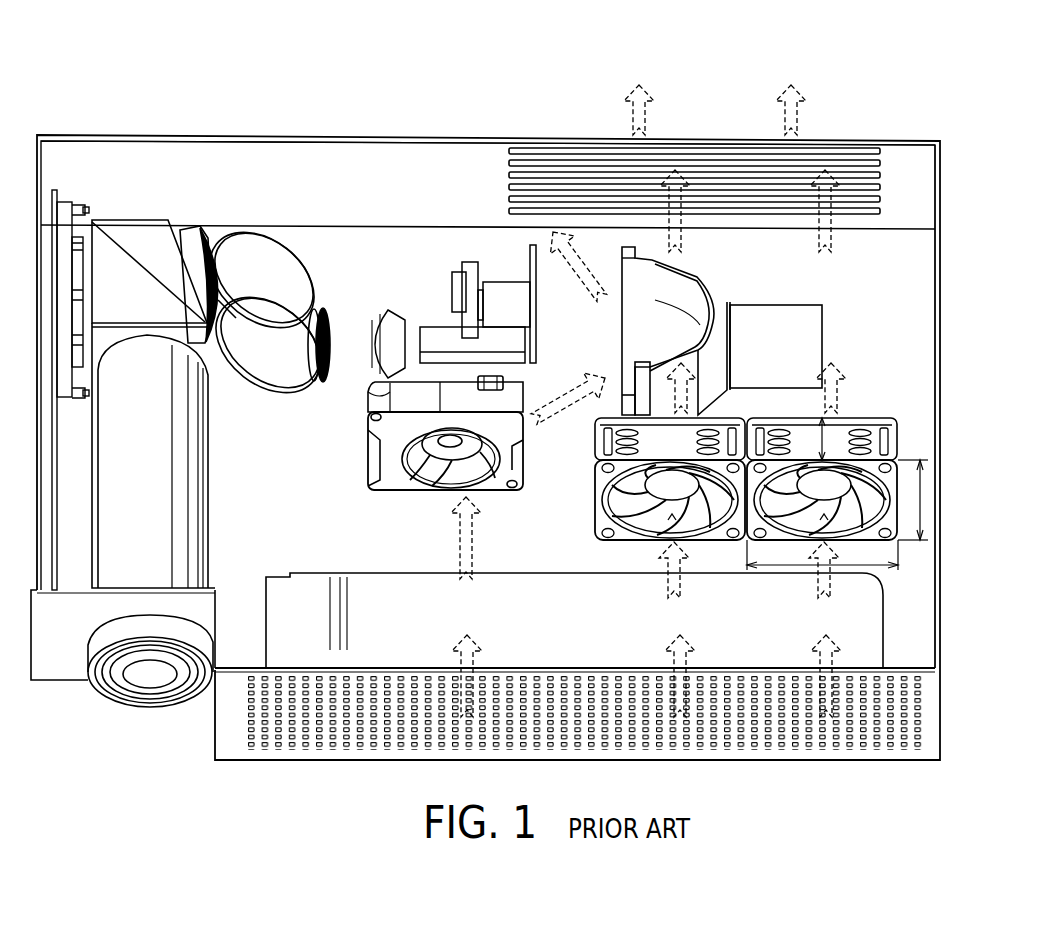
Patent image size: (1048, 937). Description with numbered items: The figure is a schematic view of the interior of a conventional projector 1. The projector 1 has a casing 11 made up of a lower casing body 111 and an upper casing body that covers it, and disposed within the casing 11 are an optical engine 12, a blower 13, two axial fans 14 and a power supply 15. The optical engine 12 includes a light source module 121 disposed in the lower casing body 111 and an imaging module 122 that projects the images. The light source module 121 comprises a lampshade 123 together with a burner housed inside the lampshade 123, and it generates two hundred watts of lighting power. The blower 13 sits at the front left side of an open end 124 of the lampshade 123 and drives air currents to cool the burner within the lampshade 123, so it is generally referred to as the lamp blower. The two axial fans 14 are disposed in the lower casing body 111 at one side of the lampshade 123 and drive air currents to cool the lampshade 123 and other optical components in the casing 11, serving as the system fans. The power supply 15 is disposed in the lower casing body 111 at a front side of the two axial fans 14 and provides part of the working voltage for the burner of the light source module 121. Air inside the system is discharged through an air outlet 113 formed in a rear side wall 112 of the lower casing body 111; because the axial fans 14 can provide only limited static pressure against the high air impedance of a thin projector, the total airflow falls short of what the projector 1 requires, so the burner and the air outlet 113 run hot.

The projector 1 is at (1010, 81).
The casing 11 is at (905, 134).
The lower casing body 111 is at (914, 295).
The rear side wall 112 is at (442, 175).
The air outlet 113 is at (597, 165).
The optical engine 12 is at (748, 43).
The light source module 121 is at (700, 258).
The imaging module 122 is at (299, 247).
The lampshade 123 is at (675, 323).
The open end 124 is at (622, 310).
The blower 13 is at (418, 397).
The axial fans 14 is at (655, 448).
The power supply 15 is at (320, 588).